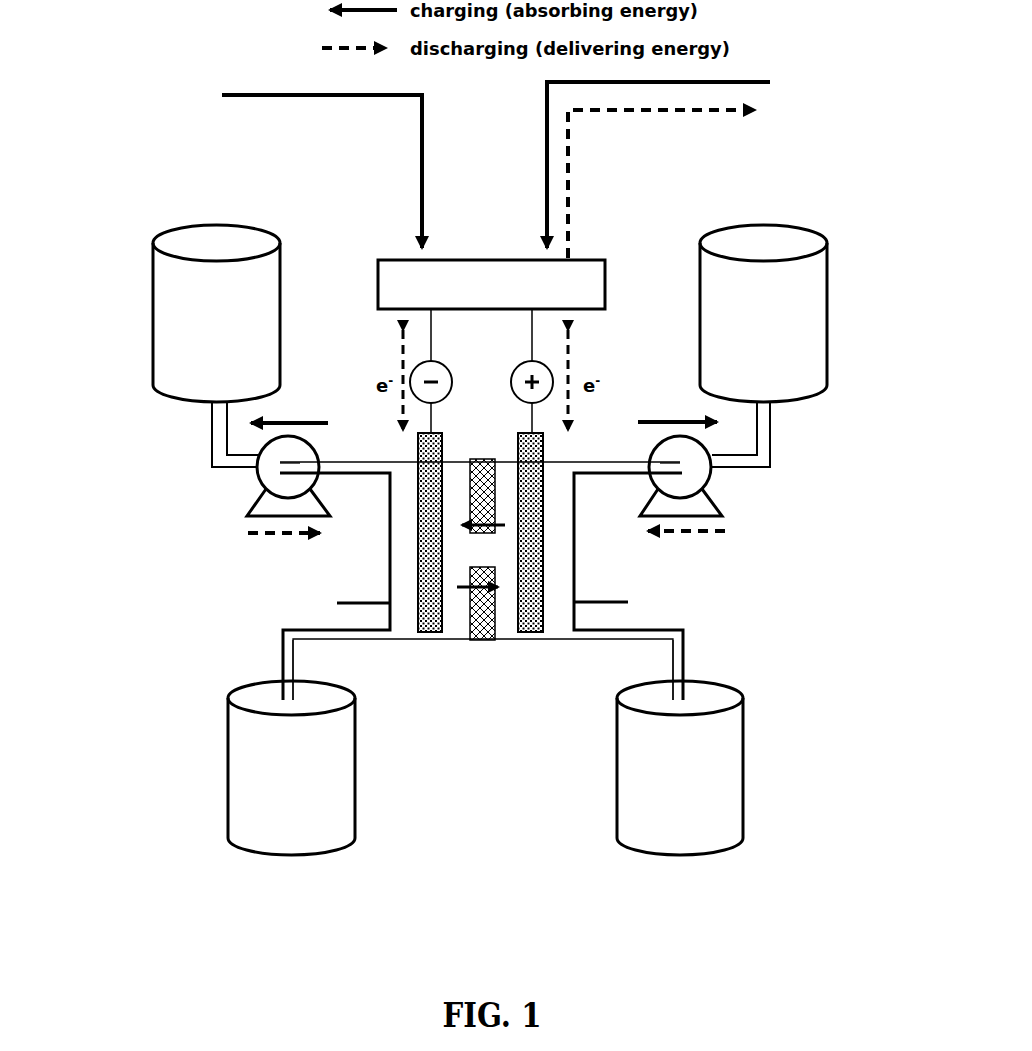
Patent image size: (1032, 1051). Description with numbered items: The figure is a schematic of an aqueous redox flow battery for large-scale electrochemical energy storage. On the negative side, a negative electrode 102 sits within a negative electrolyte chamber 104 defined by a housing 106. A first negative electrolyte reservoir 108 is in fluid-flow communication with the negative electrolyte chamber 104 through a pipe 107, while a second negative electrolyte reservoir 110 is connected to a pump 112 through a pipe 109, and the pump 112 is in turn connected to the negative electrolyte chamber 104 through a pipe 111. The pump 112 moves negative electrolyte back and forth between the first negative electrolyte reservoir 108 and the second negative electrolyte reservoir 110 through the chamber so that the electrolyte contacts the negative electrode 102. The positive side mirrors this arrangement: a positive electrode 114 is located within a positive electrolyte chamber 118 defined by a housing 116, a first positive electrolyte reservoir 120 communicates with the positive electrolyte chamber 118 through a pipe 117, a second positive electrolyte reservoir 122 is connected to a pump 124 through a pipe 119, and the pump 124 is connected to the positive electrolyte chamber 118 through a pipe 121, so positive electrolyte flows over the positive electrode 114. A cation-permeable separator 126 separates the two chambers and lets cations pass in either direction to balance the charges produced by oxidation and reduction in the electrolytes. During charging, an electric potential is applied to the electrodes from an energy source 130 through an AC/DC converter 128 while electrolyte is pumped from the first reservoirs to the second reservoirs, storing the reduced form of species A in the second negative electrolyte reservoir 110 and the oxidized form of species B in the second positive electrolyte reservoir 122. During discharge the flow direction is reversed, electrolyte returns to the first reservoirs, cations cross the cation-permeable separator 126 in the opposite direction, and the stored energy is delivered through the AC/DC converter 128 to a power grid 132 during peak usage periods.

The negative electrode 102 is at (413, 538).
The negative electrolyte chamber 104 is at (403, 507).
The housing 106 is at (340, 602).
The pipe 107 is at (355, 633).
The first negative electrolyte reservoir 108 is at (280, 805).
The pipe 109 is at (218, 423).
The second negative electrolyte reservoir 110 is at (178, 348).
The pipe 111 is at (280, 467).
The pump 112 is at (265, 477).
The positive electrode 114 is at (545, 538).
The housing 116 is at (630, 604).
The pipe 117 is at (612, 633).
The positive electrolyte chamber 118 is at (558, 513).
The pipe 119 is at (767, 433).
The first positive electrolyte reservoir 120 is at (677, 807).
The pipe 121 is at (660, 463).
The second positive electrolyte reservoir 122 is at (780, 342).
The pump 124 is at (698, 475).
The cation-permeable separator 126 is at (483, 628).
The AC/DC converter 128 is at (485, 273).
The energy source 130 is at (222, 95).
The power grid 132 is at (770, 82).